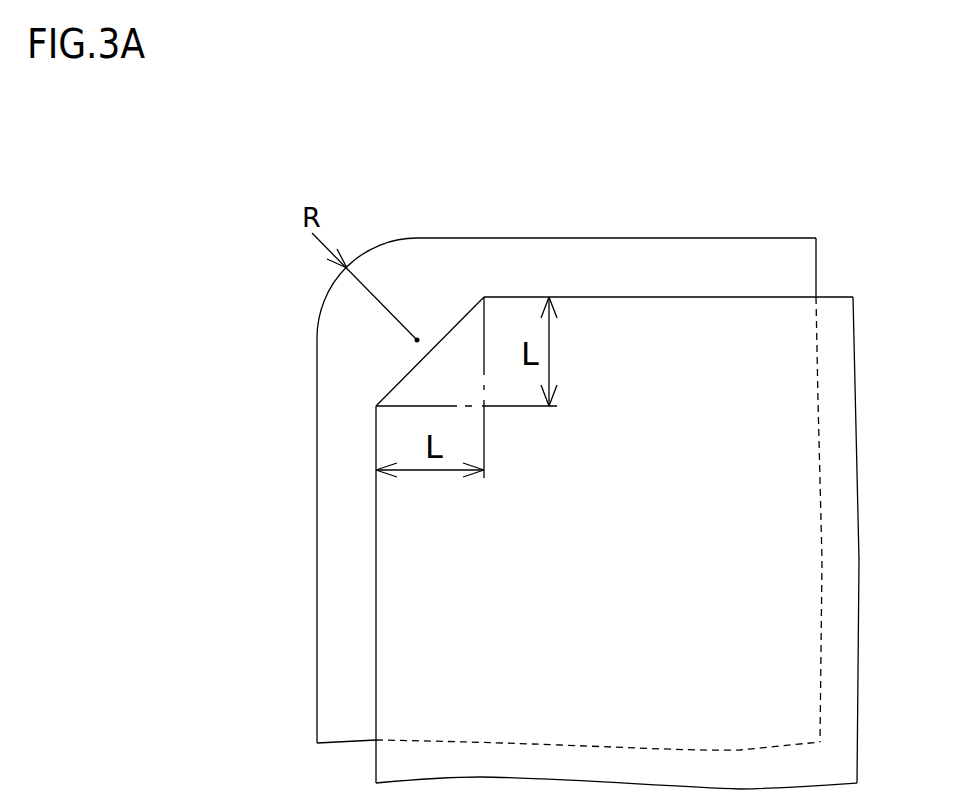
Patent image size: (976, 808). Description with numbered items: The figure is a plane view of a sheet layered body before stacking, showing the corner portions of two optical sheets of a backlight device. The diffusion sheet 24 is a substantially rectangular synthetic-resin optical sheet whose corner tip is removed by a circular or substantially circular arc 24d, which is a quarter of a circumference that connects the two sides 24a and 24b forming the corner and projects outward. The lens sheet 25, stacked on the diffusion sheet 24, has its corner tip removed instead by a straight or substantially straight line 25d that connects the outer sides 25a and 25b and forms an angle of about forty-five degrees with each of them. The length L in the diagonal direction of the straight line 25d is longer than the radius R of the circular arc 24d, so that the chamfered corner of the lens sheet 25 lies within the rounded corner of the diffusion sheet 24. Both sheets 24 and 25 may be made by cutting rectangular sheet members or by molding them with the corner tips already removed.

The diffusion sheet 24 is at (700, 250).
The side of diffusion sheet 24a is at (552, 238).
The side of diffusion sheet 24b is at (317, 450).
The circular arc 24d is at (362, 253).
The lens sheet 25 is at (755, 305).
The outer side of lens sheet 25a is at (605, 297).
The outer side of lens sheet 25b is at (376, 538).
The straight line 25d is at (447, 333).